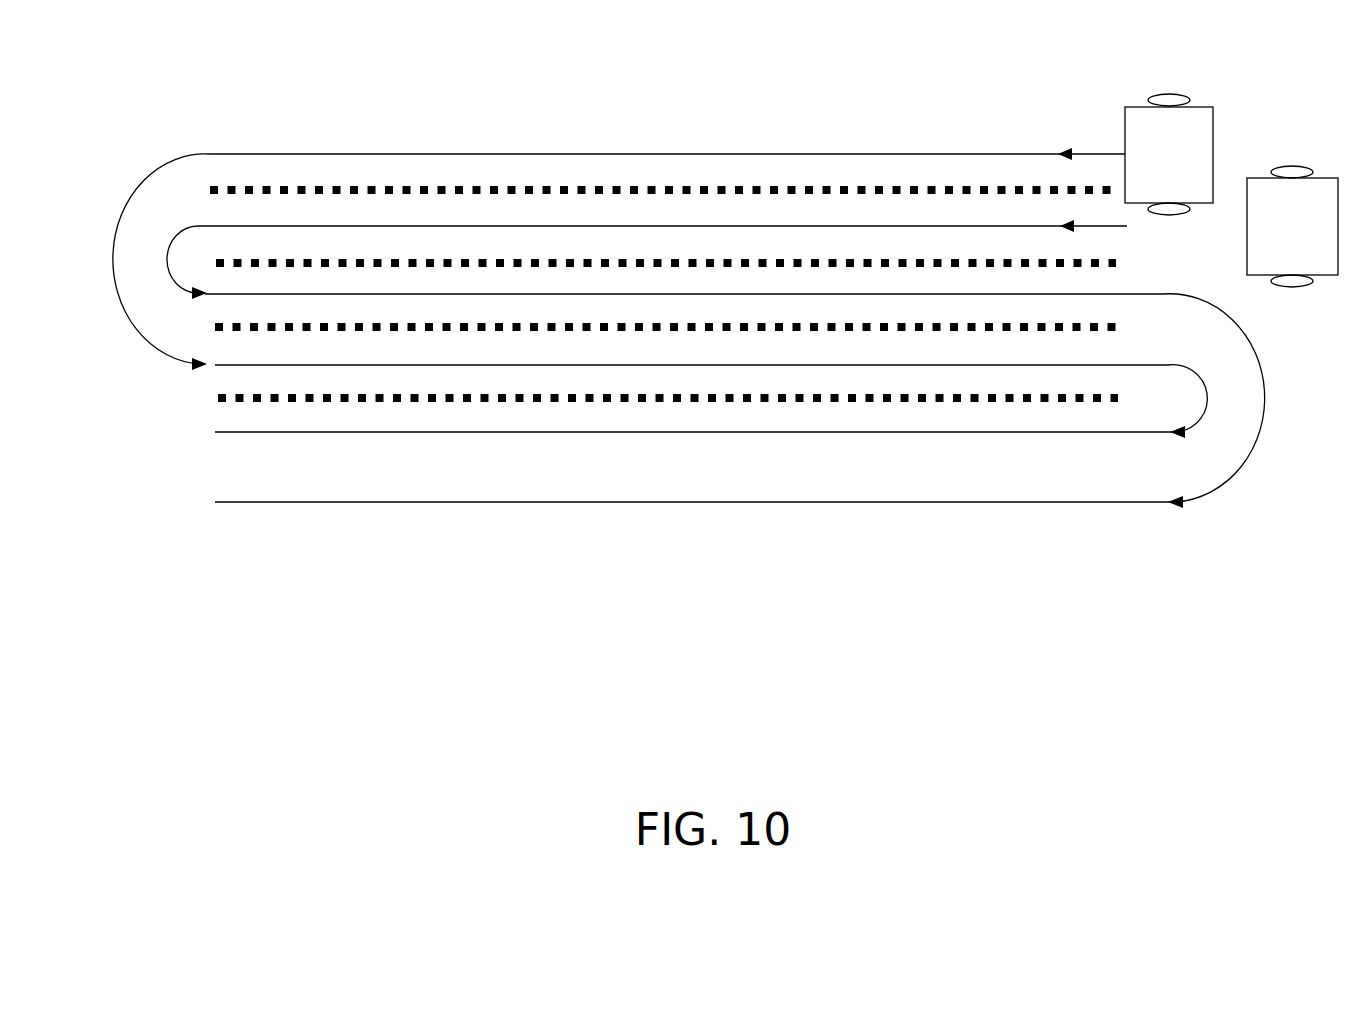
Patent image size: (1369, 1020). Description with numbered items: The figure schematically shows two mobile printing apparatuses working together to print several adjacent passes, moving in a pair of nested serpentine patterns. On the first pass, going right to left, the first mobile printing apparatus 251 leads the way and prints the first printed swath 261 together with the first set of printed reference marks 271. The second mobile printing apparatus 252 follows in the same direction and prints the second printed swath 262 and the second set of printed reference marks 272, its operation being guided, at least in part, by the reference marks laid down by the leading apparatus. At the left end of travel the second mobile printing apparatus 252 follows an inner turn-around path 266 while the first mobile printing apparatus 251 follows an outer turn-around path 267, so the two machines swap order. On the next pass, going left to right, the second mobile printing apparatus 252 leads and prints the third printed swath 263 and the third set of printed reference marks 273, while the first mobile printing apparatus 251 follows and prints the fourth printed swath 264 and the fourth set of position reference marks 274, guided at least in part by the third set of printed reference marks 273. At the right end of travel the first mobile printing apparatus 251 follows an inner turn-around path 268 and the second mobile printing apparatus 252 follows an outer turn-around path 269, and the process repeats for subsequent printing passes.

The first mobile printing apparatus 251 is at (1197, 105).
The second mobile printing apparatus 252 is at (1261, 177).
The first printed swath 261 is at (400, 153).
The second printed swath 262 is at (465, 226).
The third printed swath 263 is at (845, 294).
The fourth printed swath 264 is at (230, 364).
The inner turn-around path 266 is at (183, 235).
The outer turn-around path 267 is at (118, 245).
The inner turn-around path 268 is at (1203, 388).
The outer turn-around path 269 is at (1258, 428).
The first set of printed reference marks 271 is at (286, 188).
The second set of printed reference marks 272 is at (567, 262).
The third set of printed reference marks 273 is at (673, 326).
The fourth set of position reference marks 274 is at (253, 398).